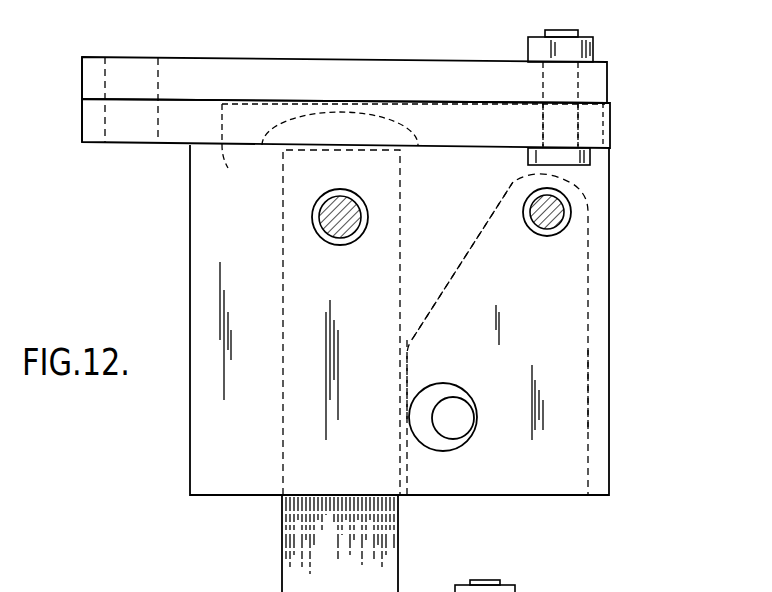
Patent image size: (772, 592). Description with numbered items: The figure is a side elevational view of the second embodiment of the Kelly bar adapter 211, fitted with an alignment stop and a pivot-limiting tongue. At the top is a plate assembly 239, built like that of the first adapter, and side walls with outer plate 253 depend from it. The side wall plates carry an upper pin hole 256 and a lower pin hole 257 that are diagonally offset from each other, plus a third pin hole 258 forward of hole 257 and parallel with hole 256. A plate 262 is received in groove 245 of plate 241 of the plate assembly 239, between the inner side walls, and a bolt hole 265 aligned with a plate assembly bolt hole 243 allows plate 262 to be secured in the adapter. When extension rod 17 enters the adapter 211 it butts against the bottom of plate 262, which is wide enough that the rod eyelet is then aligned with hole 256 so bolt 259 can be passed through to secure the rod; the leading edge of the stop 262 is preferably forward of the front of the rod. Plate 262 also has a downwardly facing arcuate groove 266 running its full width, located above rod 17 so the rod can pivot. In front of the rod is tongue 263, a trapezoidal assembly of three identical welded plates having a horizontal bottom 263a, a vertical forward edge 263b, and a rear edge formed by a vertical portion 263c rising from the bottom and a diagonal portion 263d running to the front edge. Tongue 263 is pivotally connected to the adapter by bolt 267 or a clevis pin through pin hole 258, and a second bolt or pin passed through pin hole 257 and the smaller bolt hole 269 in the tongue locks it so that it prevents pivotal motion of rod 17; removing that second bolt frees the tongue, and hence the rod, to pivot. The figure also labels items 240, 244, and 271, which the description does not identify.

The extension rod 17 is at (398, 543).
The Kelly bar adapter 211 is at (667, 116).
The plate assembly 239 is at (72, 60).
The upper plate 240 is at (82, 77).
The plate 241 is at (82, 118).
The plate assembly bolt hole 243 is at (110, 76).
The bolt 244 is at (575, 30).
The groove 245 is at (248, 146).
The outer plate 253 is at (213, 462).
The upper pin hole 256 is at (326, 236).
The lower pin hole 257 is at (462, 385).
The third pin hole 258 is at (566, 226).
The bolt 259 is at (360, 233).
The plate 262 is at (468, 128).
The tongue 263 is at (567, 444).
The horizontal bottom 263a is at (495, 495).
The vertical forward edge 263b is at (584, 392).
The vertical portion 263c is at (408, 363).
The diagonal portion 263d is at (454, 277).
The bolt hole 265 is at (543, 124).
The arcuate groove 266 is at (392, 114).
The bolt 267 is at (553, 203).
The bolt hole 269 is at (443, 439).
The nut 271 is at (710, 586).